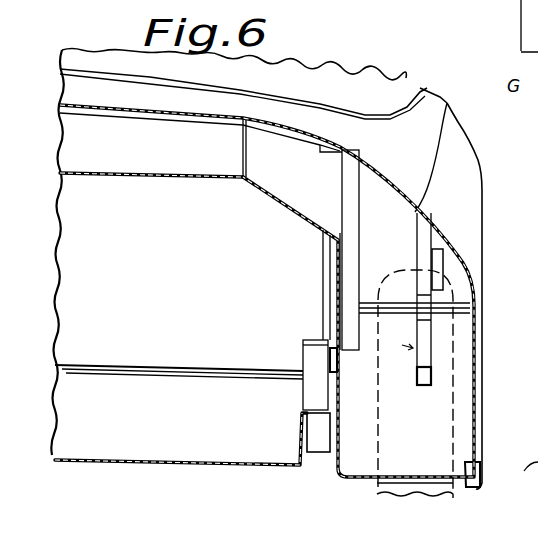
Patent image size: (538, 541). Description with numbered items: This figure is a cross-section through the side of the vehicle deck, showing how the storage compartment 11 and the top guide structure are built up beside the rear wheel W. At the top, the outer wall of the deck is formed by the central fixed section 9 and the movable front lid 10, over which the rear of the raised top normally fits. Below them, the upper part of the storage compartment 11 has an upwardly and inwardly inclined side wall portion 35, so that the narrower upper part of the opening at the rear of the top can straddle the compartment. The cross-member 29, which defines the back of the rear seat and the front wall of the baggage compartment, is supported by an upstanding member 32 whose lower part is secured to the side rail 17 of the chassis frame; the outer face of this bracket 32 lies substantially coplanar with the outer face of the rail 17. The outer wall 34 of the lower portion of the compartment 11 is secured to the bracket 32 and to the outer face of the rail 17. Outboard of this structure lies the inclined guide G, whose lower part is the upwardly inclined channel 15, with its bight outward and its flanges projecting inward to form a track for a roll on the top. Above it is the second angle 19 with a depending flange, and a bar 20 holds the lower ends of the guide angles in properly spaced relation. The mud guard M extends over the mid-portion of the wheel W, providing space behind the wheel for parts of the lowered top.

The central fixed section 9 is at (430, 107).
The movable front lid 10 is at (368, 85).
The storage compartment 11 is at (228, 257).
The upwardly inclined channel 15 is at (433, 377).
The side rail 17 is at (317, 453).
The second angle 19 is at (416, 240).
The bar 20 is at (443, 260).
The cross-member 29 is at (382, 174).
The upstanding member 32 is at (323, 263).
The outer wall of lower compartment portion 34 is at (337, 295).
The inclined side wall portions 35 is at (315, 247).
The guide G is at (398, 345).
The mud guard M is at (345, 467).
The rear wheel W is at (382, 485).